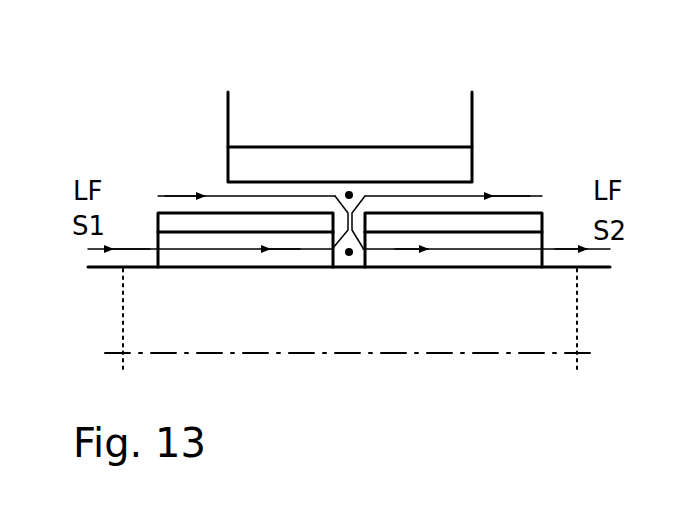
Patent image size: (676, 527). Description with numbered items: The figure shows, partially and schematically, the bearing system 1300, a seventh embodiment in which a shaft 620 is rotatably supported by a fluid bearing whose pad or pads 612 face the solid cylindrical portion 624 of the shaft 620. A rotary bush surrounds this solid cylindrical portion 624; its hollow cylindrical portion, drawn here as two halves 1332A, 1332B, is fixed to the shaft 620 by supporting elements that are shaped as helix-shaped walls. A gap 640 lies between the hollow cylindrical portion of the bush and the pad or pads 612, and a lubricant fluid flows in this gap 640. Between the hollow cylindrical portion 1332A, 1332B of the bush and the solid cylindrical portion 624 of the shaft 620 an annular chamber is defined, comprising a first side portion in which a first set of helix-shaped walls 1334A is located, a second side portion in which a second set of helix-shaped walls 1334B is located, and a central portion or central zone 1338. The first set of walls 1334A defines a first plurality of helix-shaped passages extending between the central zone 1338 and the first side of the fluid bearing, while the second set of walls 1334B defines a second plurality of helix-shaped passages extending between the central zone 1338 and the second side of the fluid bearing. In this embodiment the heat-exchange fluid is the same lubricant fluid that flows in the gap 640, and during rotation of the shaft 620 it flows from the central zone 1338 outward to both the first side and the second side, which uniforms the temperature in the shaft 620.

The bearing system 1300 is at (200, 108).
The hollow cylindrical portion 1332A is at (182, 223).
The first set of helix-shaped walls 1334A is at (173, 255).
The hollow cylindrical portion 1332B is at (400, 223).
The second set of helix-shaped walls 1334B is at (523, 257).
The pad 612 is at (297, 163).
The gap 640 is at (349, 195).
The central zone 1338 is at (349, 252).
The solid cylindrical portion 624 is at (262, 330).
The shaft 620 is at (348, 357).